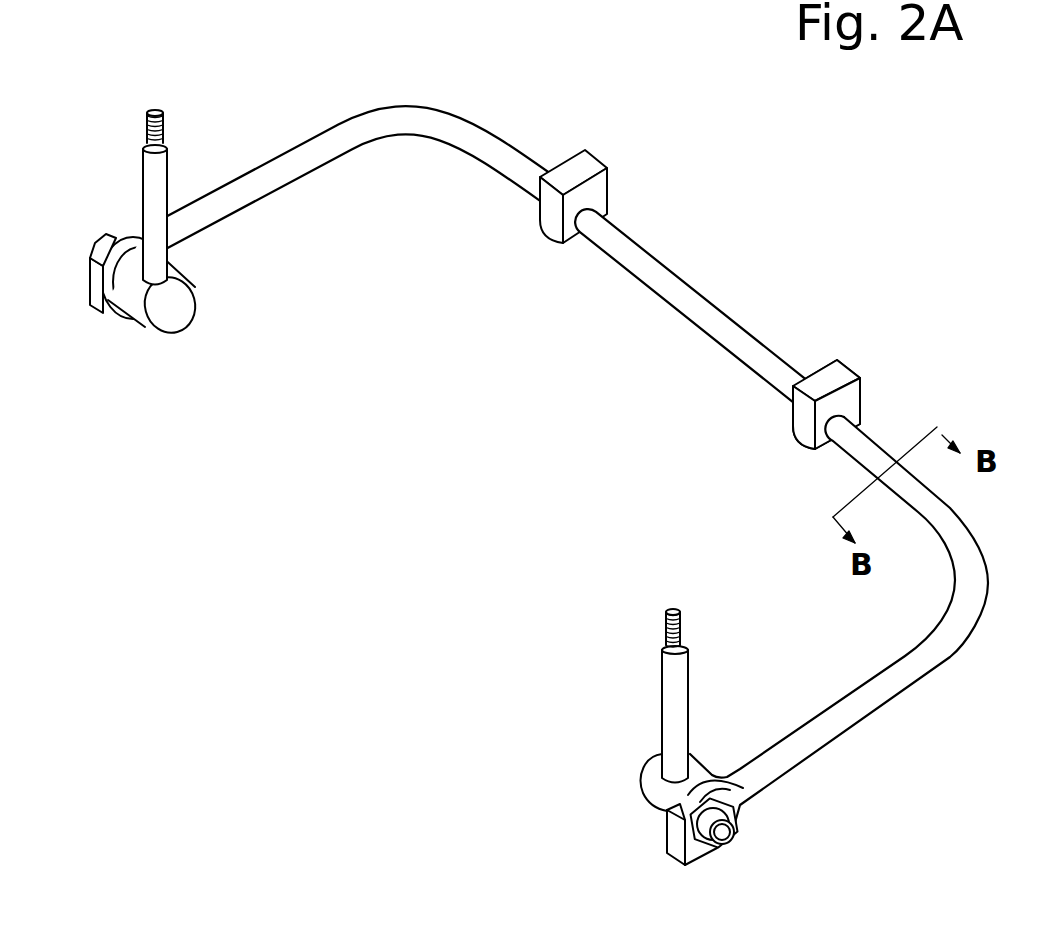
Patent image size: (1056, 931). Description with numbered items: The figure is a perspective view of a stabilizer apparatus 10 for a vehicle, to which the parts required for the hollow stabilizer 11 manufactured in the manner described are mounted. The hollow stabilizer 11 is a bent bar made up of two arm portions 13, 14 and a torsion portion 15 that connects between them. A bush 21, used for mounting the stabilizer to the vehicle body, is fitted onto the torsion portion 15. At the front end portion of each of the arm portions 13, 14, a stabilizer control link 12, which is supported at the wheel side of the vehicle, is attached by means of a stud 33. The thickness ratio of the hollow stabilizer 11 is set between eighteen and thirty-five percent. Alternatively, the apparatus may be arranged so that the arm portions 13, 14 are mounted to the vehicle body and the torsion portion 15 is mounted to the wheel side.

The stabilizer apparatus 10 is at (878, 260).
The hollow stabilizer 11 is at (574, 446).
The stabilizer control link 12 is at (416, 487).
The arm portion 13 is at (817, 727).
The arm portion 14 is at (252, 183).
The torsion portion 15 is at (693, 312).
The bush 21 is at (609, 176).
The stud 33 is at (93, 240).